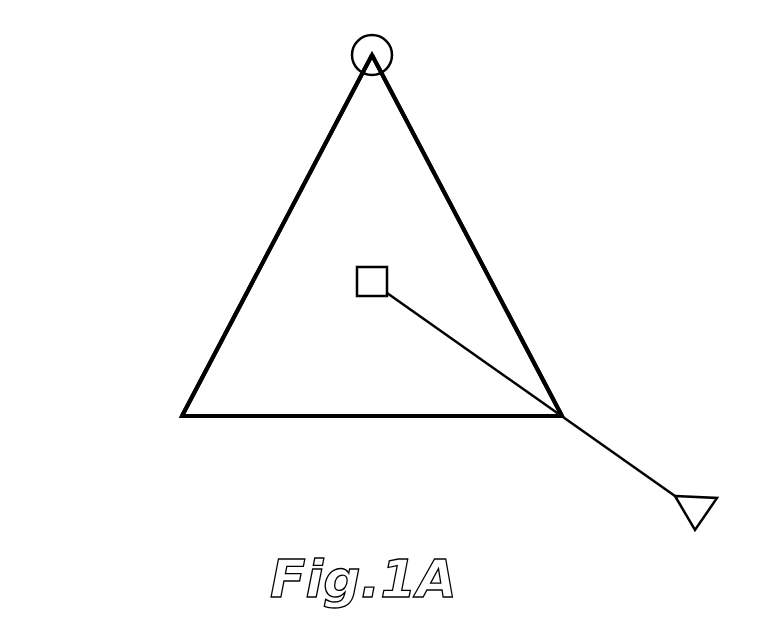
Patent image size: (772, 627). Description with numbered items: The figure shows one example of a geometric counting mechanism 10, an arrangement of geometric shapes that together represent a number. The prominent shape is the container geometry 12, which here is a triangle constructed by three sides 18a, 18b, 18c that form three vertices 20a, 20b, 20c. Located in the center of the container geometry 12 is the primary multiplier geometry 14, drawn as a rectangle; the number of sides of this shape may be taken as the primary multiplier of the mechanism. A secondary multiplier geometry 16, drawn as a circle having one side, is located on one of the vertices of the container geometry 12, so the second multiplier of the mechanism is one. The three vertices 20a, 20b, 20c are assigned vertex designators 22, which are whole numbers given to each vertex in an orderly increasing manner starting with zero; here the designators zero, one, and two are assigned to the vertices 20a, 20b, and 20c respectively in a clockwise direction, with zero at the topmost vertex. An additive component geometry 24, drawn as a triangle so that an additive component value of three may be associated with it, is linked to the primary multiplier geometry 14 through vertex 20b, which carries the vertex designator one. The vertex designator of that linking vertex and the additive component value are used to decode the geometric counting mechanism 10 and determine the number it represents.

The geometric counting mechanism 10 is at (145, 88).
The container geometry 12 is at (448, 148).
The primary multiplier geometry 14 is at (388, 278).
The secondary multiplier geometry 16 is at (392, 58).
The side 18a is at (268, 251).
The side 18b is at (277, 417).
The side 18c is at (451, 204).
The vertex 20a is at (372, 85).
The vertex 20b is at (537, 400).
The vertex 20c is at (207, 396).
The vertex designators 22 is at (360, 118).
The additive component geometry 24 is at (705, 497).